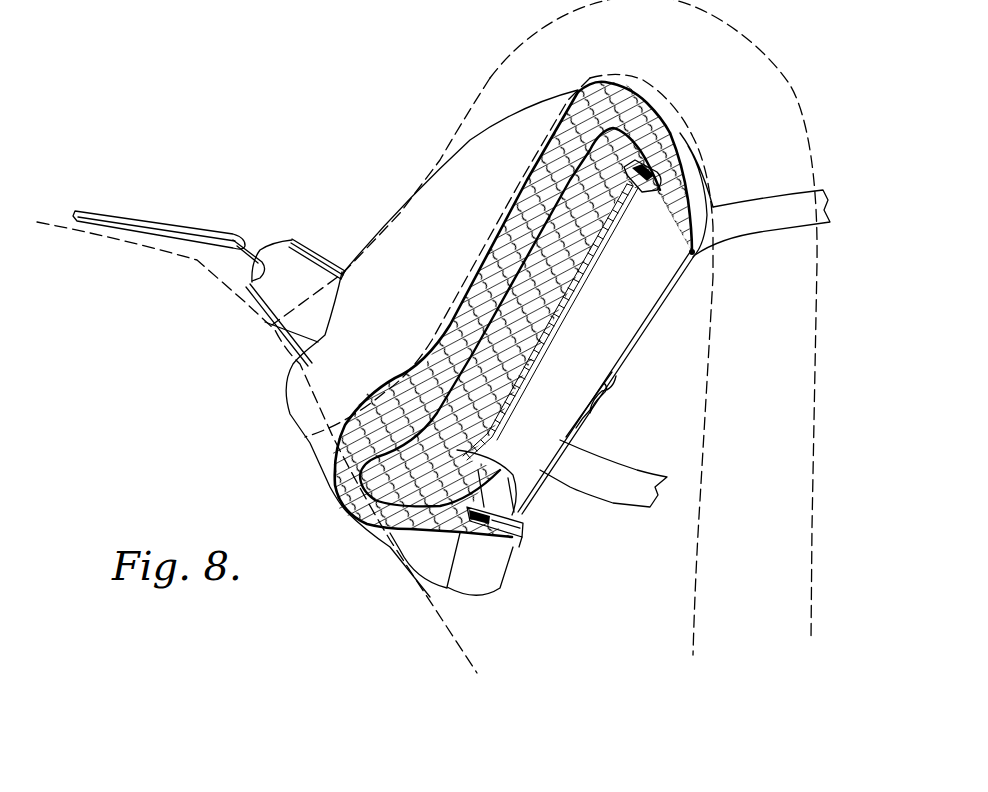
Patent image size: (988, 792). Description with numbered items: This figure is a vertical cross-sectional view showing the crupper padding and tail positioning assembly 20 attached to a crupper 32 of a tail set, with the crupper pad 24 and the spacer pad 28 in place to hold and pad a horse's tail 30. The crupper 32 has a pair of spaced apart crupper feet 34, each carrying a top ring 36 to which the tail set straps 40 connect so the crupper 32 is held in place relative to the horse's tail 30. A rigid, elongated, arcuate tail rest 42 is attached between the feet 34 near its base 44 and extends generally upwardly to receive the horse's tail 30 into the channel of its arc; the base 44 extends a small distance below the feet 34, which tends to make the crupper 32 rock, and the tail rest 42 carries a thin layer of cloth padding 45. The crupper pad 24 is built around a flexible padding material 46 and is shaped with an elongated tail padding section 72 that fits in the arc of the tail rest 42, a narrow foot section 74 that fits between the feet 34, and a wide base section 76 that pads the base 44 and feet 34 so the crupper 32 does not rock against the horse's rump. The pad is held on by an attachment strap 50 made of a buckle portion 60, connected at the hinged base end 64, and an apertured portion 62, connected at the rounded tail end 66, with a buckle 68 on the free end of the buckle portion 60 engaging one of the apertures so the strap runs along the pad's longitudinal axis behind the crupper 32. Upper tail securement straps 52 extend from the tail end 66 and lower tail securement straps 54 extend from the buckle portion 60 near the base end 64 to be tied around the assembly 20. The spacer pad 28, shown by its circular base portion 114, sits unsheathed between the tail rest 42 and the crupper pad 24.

The crupper padding and tail positioning assembly 20 is at (521, 303).
The crupper pad 24 is at (600, 95).
The spacer pad 28 is at (667, 118).
The horse's tail 30 is at (487, 79).
The crupper 32 is at (574, 370).
The crupper feet 34 is at (297, 270).
The top ring 36 is at (255, 252).
The tail set straps 40 is at (86, 213).
The tail rest 42 is at (585, 265).
The base of tail rest 44 is at (365, 527).
The cloth padding 45 is at (607, 222).
The flexible padding material 46 is at (515, 242).
The attachment strap 50 is at (665, 386).
The upper tail securement straps 52 is at (775, 215).
The lower tail securement straps 54 is at (652, 493).
The buckle portion 60 is at (532, 498).
The apertured portion 62 is at (668, 300).
The hinged base end 64 is at (487, 580).
The rounded tail end 66 is at (700, 200).
The buckle 68 is at (593, 408).
The tail padding section 72 is at (480, 172).
The foot section 74 is at (266, 322).
The base section 76 is at (330, 493).
The circular base portion 114 is at (413, 440).